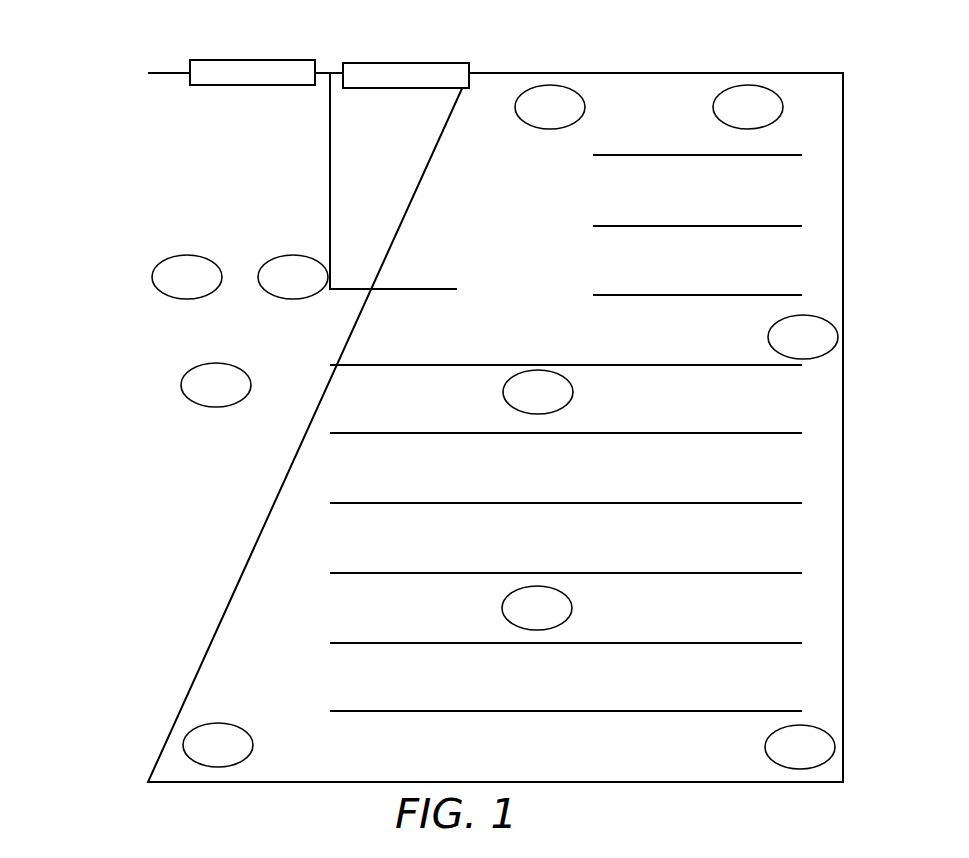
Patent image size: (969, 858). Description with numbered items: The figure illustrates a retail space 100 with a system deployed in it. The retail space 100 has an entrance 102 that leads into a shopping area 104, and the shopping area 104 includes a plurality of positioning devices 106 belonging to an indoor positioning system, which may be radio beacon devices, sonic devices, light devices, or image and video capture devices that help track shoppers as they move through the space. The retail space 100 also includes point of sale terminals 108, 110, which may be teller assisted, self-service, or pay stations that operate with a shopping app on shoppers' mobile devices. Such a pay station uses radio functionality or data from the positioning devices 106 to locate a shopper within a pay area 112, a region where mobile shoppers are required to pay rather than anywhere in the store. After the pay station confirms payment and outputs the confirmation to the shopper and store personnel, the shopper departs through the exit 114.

The retail space 100 is at (780, 72).
The entrance 102 is at (410, 62).
The shopping area 104 is at (755, 197).
The positioning devices 106 is at (560, 84).
The point of sale terminal 108 is at (152, 270).
The point of sale terminal 110 is at (305, 254).
The pay area 112 is at (175, 115).
The exit 114 is at (233, 58).